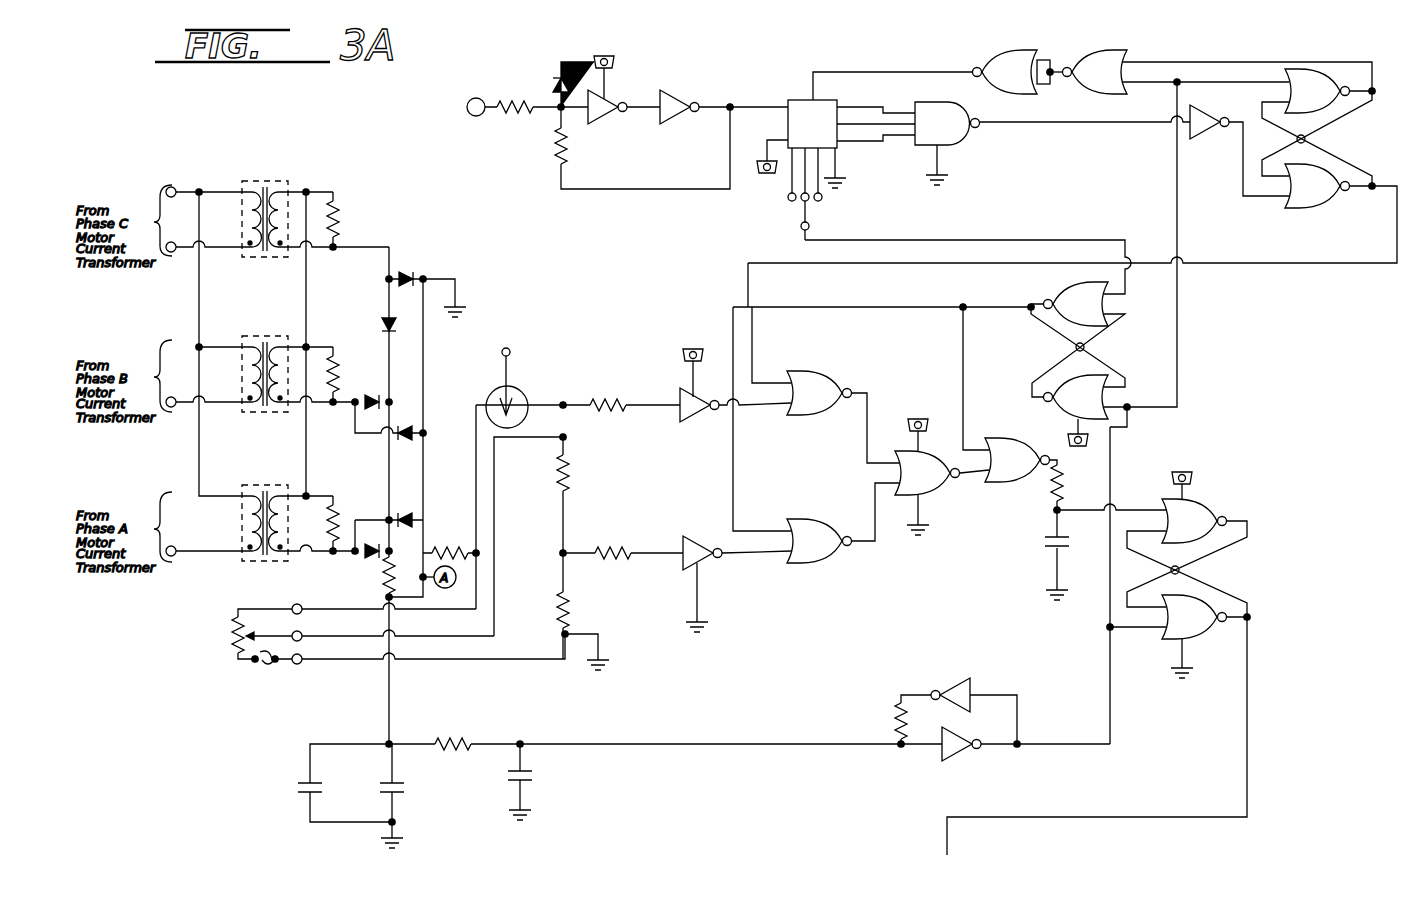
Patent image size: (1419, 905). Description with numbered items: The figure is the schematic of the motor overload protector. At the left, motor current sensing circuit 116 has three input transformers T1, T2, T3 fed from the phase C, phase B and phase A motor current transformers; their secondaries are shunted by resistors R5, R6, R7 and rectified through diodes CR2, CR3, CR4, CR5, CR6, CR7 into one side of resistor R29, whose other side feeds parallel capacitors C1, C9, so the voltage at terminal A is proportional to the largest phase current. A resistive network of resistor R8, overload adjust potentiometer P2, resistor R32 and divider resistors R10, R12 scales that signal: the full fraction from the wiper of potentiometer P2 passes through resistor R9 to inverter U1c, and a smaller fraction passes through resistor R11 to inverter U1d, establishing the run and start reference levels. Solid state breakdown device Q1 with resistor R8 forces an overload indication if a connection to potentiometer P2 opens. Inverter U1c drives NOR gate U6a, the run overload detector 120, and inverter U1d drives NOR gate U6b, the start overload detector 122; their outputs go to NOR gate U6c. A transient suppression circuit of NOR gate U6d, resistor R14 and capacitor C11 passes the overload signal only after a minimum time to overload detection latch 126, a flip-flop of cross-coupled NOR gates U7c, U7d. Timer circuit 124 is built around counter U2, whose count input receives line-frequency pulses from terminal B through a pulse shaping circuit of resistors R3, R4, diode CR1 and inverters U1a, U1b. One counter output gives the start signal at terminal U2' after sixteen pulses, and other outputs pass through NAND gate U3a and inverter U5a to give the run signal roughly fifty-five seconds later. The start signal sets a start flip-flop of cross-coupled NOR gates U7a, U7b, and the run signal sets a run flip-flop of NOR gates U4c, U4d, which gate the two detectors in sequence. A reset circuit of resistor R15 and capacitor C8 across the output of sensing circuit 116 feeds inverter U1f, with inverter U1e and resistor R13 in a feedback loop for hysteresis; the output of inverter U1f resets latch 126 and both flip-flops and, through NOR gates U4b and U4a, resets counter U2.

The motor current sensing circuit 116 is at (277, 348).
The run overload detector 120 is at (843, 366).
The start overload detector 122 is at (822, 527).
The timer circuit 124 is at (853, 98).
The overload detection latch circuit 126 is at (1220, 564).
The input transformer T1 is at (270, 175).
The input transformer T2 is at (266, 336).
The input transformer T3 is at (266, 485).
The resistor R3 is at (510, 98).
The resistor R4 is at (556, 158).
The resistor R5 is at (340, 215).
The resistor R6 is at (337, 358).
The resistor R7 is at (338, 505).
The resistor R8 is at (445, 548).
The resistor R9 is at (605, 398).
The resistor R10 is at (572, 484).
The resistor R11 is at (615, 545).
The resistor R12 is at (575, 600).
The resistor R13 is at (892, 710).
The resistor R14 is at (1048, 488).
The resistor R15 is at (458, 738).
The resistor R29 is at (380, 576).
The resistor R32 is at (262, 670).
The overload adjust potentiometer P2 is at (235, 640).
The diode CR1 is at (555, 78).
The rectifying diode CR2 is at (397, 325).
The rectifying diode CR3 is at (408, 274).
The rectifying diode CR4 is at (373, 396).
The rectifying diode CR5 is at (410, 426).
The rectifying diode CR6 is at (415, 520).
The rectifying diode CR7 is at (362, 562).
The capacitor C1 is at (405, 788).
The capacitor C8 is at (534, 777).
The capacitor C9 is at (300, 788).
The capacitor C11 is at (1045, 548).
The solid state breakdown device Q1 is at (518, 390).
The inverter U1a is at (600, 122).
The inverter U1b is at (673, 120).
The inverter U1c is at (692, 416).
The inverter U1d is at (705, 568).
The inverter U1e is at (955, 678).
The inverter U1f is at (968, 757).
The counter U2 is at (853, 113).
The start signal terminal U2' is at (831, 216).
The NAND gate U3a is at (960, 148).
The NOR gate U4a is at (1003, 52).
The NOR gate U4b is at (1118, 52).
The NOR gate U4c is at (1308, 76).
The NOR gate U4d is at (1305, 210).
The inverter U5a is at (1200, 134).
The NOR gate U6a is at (820, 355).
The NOR gate U6b is at (835, 563).
The NOR gate U6c is at (897, 455).
The NOR gate U6d is at (1000, 440).
The NOR gate U7a is at (1062, 285).
The NOR gate U7b is at (1112, 385).
The NOR gate U7c is at (1205, 508).
The NOR gate U7d is at (1195, 638).